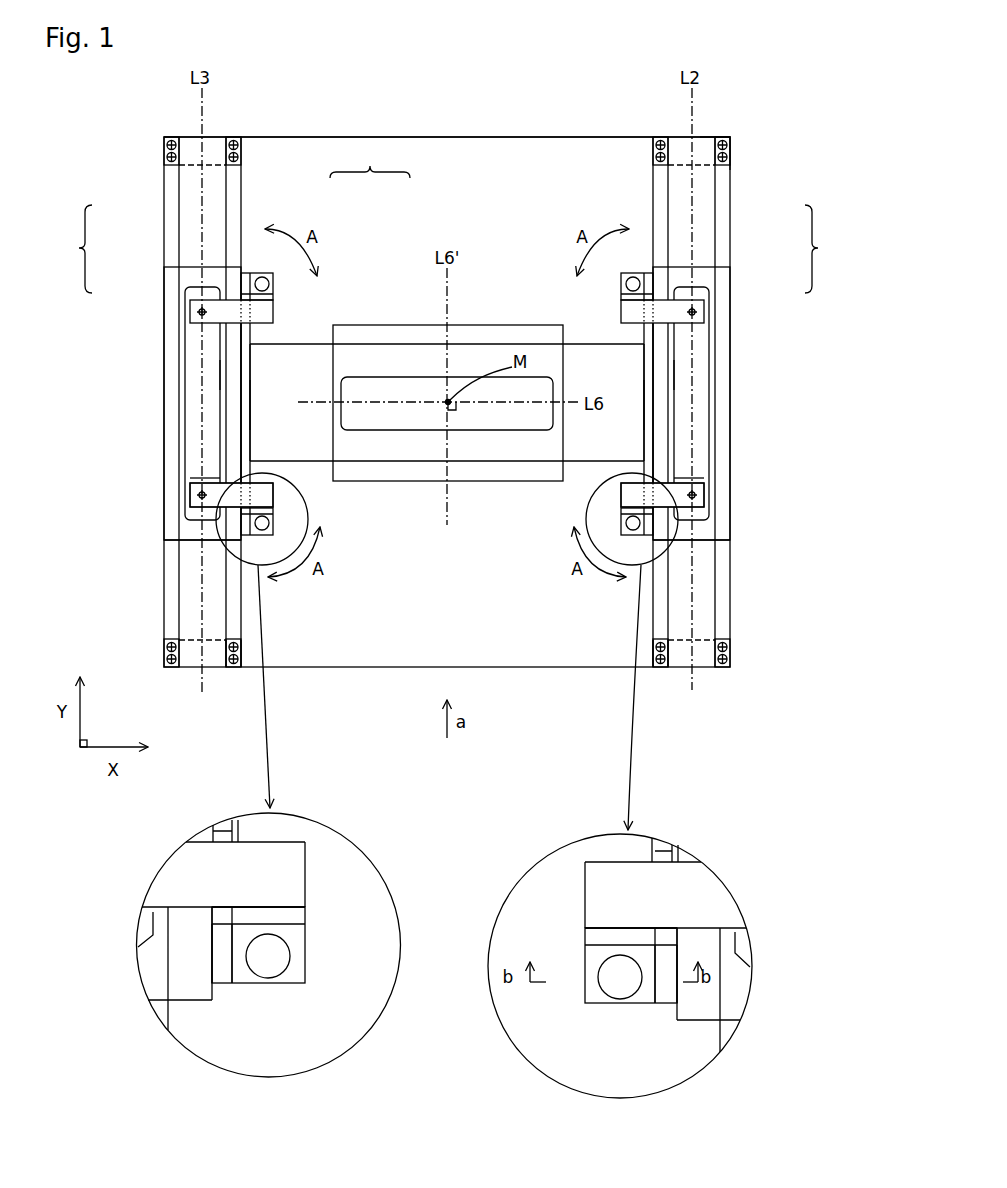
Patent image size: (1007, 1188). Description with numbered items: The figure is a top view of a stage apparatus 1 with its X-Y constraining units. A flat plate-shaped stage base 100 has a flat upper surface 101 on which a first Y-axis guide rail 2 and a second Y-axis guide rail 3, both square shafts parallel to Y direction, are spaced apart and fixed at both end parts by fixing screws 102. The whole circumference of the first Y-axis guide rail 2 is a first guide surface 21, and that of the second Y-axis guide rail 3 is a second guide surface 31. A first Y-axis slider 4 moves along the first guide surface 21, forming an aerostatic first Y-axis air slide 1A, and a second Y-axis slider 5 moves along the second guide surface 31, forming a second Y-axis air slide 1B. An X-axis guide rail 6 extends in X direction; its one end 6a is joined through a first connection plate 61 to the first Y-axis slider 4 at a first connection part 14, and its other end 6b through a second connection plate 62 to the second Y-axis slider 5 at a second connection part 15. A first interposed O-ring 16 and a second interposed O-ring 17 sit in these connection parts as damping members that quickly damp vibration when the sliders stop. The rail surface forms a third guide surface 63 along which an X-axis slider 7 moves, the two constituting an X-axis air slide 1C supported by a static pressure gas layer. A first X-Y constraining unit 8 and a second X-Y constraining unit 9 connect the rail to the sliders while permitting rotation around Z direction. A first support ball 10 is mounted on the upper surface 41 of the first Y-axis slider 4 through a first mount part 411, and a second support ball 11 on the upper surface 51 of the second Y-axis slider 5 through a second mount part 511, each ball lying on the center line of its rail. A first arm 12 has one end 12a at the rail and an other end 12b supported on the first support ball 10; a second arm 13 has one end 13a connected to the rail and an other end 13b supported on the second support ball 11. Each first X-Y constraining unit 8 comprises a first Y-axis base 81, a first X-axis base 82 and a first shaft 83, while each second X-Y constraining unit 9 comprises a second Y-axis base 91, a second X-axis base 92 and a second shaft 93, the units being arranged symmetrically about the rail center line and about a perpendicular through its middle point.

The stage apparatus 1 is at (738, 112).
The first Y-axis air slide 1A is at (824, 249).
The second Y-axis air slide 1B is at (72, 249).
The X-axis air slide 1C is at (370, 160).
The first Y-axis guide rail 2 is at (717, 215).
The second Y-axis guide rail 3 is at (177, 215).
The first Y-axis slider 4 is at (732, 283).
The second Y-axis slider 5 is at (163, 283).
The X-axis guide rail 6 is at (318, 342).
The one end 6a is at (633, 405).
The other end 6b is at (262, 405).
The X-axis slider 7 is at (381, 323).
The first X-Y constraining unit 8 is at (633, 271).
The second X-Y constraining unit 9 is at (262, 271).
The first support ball 10 is at (697, 312).
The second support ball 11 is at (200, 312).
The first arm 12 is at (705, 315).
The first plate lower portion 12a is at (627, 492).
The other end 12b is at (700, 478).
The second arm 13 is at (205, 313).
The one end 13a is at (268, 492).
The other end 13b is at (207, 487).
The first connection part 14 is at (655, 352).
The second connection part 15 is at (239, 352).
The first interposed O-ring 16 is at (705, 376).
The second interposed O-ring 17 is at (240, 377).
The first guide surface 21 is at (668, 600).
The second guide surface 31 is at (226, 600).
The upper surface 41 is at (703, 528).
The first mount part 411 is at (700, 510).
The upper surface 51 is at (190, 530).
The second mount part 511 is at (193, 512).
The first connection plate 61 is at (672, 486).
The second connection plate 62 is at (222, 486).
The third guide surface 63 is at (320, 380).
The first Y-axis base 81 is at (663, 993).
The first X-axis base 82 is at (620, 933).
The first shaft 83 is at (620, 988).
The second Y-axis base 91 is at (222, 972).
The second X-axis base 92 is at (290, 934).
The second shaft 93 is at (268, 968).
The stage base 100 is at (462, 178).
The upper surface 101 is at (447, 111).
The fixing screws 102 is at (164, 140).